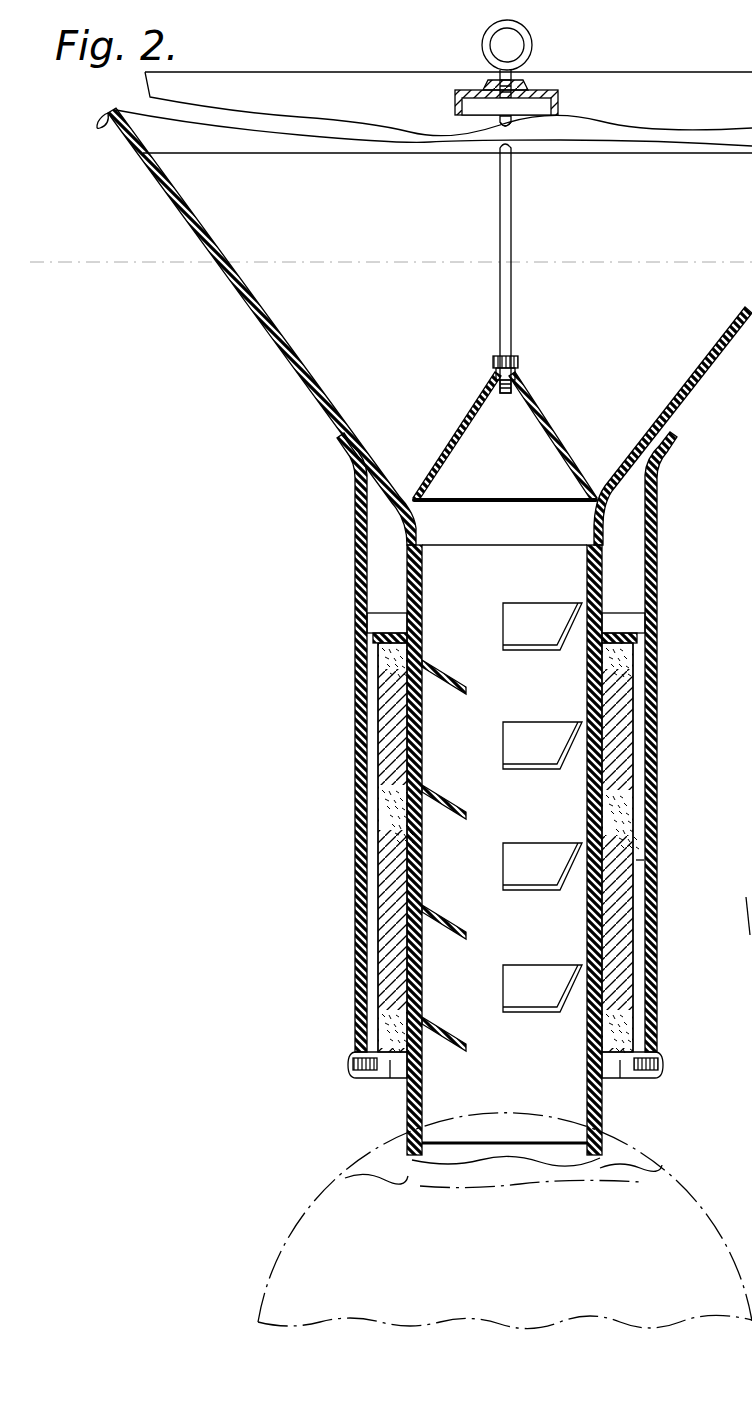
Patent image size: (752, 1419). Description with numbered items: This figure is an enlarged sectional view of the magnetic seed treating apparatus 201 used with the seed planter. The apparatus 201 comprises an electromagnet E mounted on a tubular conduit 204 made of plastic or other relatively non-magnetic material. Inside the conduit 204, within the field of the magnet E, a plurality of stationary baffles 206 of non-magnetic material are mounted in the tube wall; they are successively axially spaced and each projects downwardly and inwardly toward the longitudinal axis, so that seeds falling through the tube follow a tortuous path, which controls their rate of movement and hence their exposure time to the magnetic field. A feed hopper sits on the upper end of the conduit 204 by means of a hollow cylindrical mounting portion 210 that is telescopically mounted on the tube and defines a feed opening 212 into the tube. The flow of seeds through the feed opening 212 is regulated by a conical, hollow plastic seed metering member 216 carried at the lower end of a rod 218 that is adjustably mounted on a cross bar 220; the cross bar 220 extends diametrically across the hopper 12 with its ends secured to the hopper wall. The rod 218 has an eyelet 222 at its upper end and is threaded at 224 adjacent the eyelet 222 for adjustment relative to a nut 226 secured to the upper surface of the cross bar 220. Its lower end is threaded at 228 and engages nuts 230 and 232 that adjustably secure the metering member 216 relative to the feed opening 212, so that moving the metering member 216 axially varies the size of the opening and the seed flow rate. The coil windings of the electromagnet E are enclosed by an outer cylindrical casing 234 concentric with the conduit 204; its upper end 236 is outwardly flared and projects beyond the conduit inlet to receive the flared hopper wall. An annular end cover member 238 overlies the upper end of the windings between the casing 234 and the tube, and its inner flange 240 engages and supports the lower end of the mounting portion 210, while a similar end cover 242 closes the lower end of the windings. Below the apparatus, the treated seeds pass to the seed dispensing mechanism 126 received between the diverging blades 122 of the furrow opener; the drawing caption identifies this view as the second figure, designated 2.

The magnetic seed treating apparatus 201 is at (357, 714).
The tubular conduit 204 is at (605, 1078).
The baffles 206 is at (515, 616).
The mounting portion 210 is at (600, 552).
The feed opening 212 is at (566, 519).
The seed metering member 216 is at (553, 418).
The rod 218 is at (512, 228).
The cross bar 220 is at (558, 102).
The eyelet 222 is at (483, 40).
The threaded portion 224 is at (513, 110).
The nut 226 is at (488, 82).
The lower threaded portion 228 is at (508, 394).
The nut 230 is at (516, 358).
The nut 232 is at (493, 368).
The outer cylindrical casing 234 is at (655, 722).
The casing end 236 is at (318, 408).
The annular end cover member 238 is at (618, 650).
The inner flange 240 is at (385, 620).
The end cover 242 is at (388, 1078).
The electromagnet E is at (633, 863).
The seed dispensing mechanism 126 is at (718, 1232).
The partial numeral 2 is at (748, 635).
The hopper 12 is at (740, 740).
The blades 122 is at (734, 883).